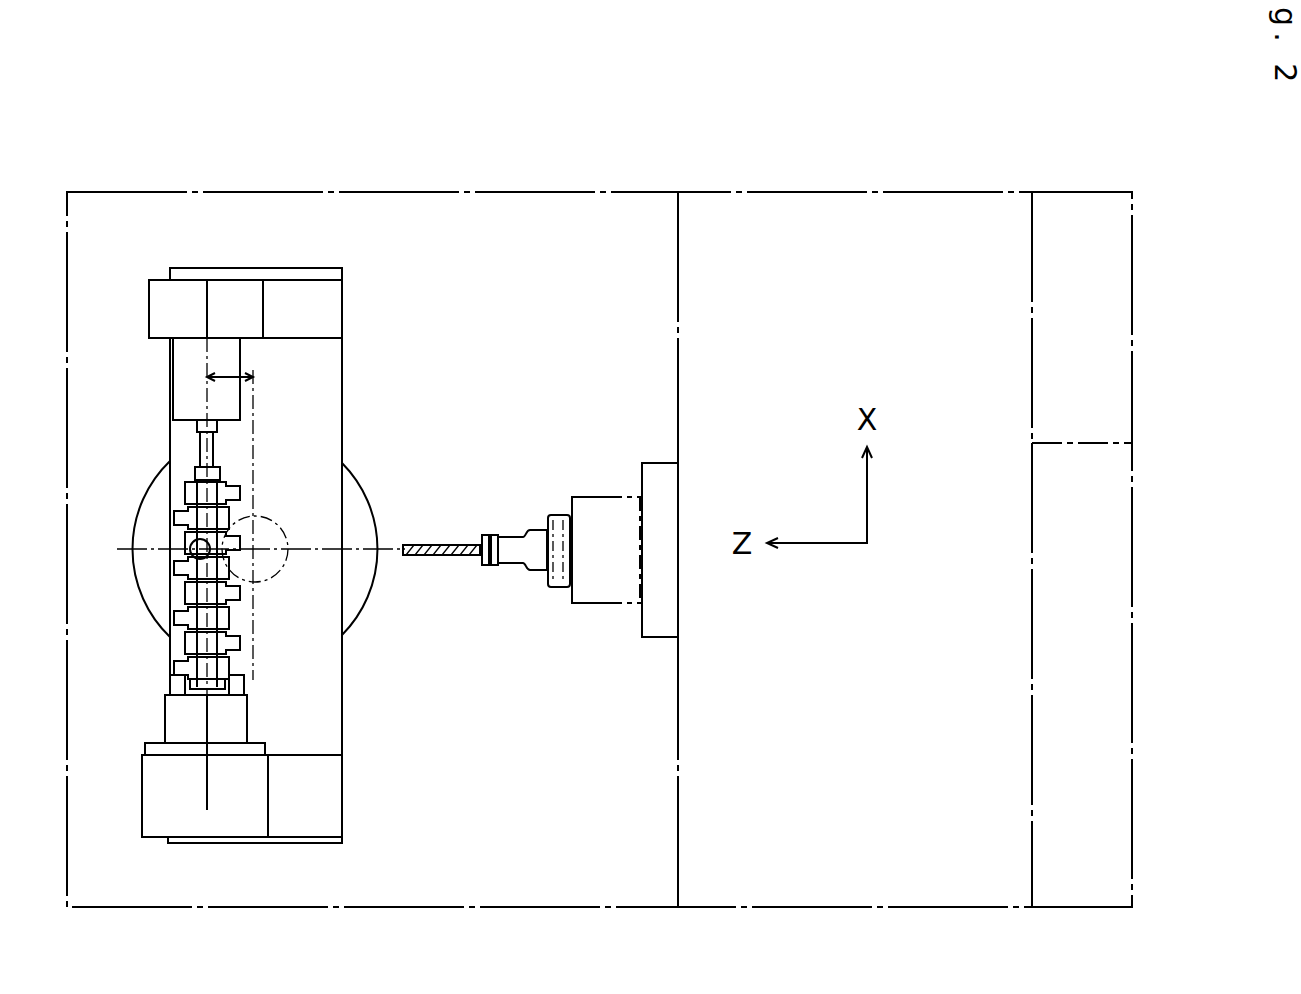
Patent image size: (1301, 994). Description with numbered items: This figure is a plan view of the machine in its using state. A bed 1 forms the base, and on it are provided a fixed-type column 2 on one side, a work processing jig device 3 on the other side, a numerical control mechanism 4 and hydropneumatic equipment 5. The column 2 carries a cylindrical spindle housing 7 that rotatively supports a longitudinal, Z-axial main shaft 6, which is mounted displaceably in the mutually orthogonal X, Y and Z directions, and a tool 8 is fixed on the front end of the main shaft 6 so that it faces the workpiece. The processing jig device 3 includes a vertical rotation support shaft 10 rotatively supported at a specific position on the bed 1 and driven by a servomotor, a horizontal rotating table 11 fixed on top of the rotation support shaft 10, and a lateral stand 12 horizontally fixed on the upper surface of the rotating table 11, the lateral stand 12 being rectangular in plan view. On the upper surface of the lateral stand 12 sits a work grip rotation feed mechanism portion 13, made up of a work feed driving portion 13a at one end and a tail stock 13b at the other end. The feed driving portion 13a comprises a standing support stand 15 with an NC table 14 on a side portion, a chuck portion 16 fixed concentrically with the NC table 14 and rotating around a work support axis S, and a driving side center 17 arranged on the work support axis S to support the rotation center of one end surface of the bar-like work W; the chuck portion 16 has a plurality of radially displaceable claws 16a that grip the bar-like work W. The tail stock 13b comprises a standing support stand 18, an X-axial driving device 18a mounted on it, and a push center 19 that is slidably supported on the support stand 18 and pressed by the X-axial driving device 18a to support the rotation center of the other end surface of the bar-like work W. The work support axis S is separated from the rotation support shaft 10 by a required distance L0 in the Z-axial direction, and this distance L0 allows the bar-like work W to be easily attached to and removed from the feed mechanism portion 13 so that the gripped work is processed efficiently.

The bed 1 is at (528, 830).
The fixed-type column 2 is at (698, 343).
The work processing jig device 3 is at (368, 323).
The numerical control mechanism 4 is at (1043, 708).
The hydropneumatic equipment 5 is at (1047, 350).
The main shaft 6 is at (557, 513).
The cylindrical spindle housing 7 is at (603, 608).
The tool 8 is at (442, 540).
The vertical rotation support shaft 10 is at (278, 577).
The horizontal rotating table 11 is at (347, 620).
The lateral stand 12 is at (328, 418).
The work grip rotation feed mechanism portion 13 is at (165, 828).
The work feed driving portion 13a is at (105, 695).
The tail stock 13b is at (145, 350).
The NC table 14 is at (148, 742).
The standing support stand 15 is at (308, 802).
The chuck portion 16 is at (227, 717).
The claws 16a is at (170, 683).
The driving side center 17 is at (220, 687).
The standing support stand 18 is at (308, 295).
The X-axial driving device 18a is at (187, 397).
The push center 19 is at (212, 428).
The bar-like work W is at (177, 492).
The work support axis S is at (207, 315).
The distance L0 is at (230, 387).